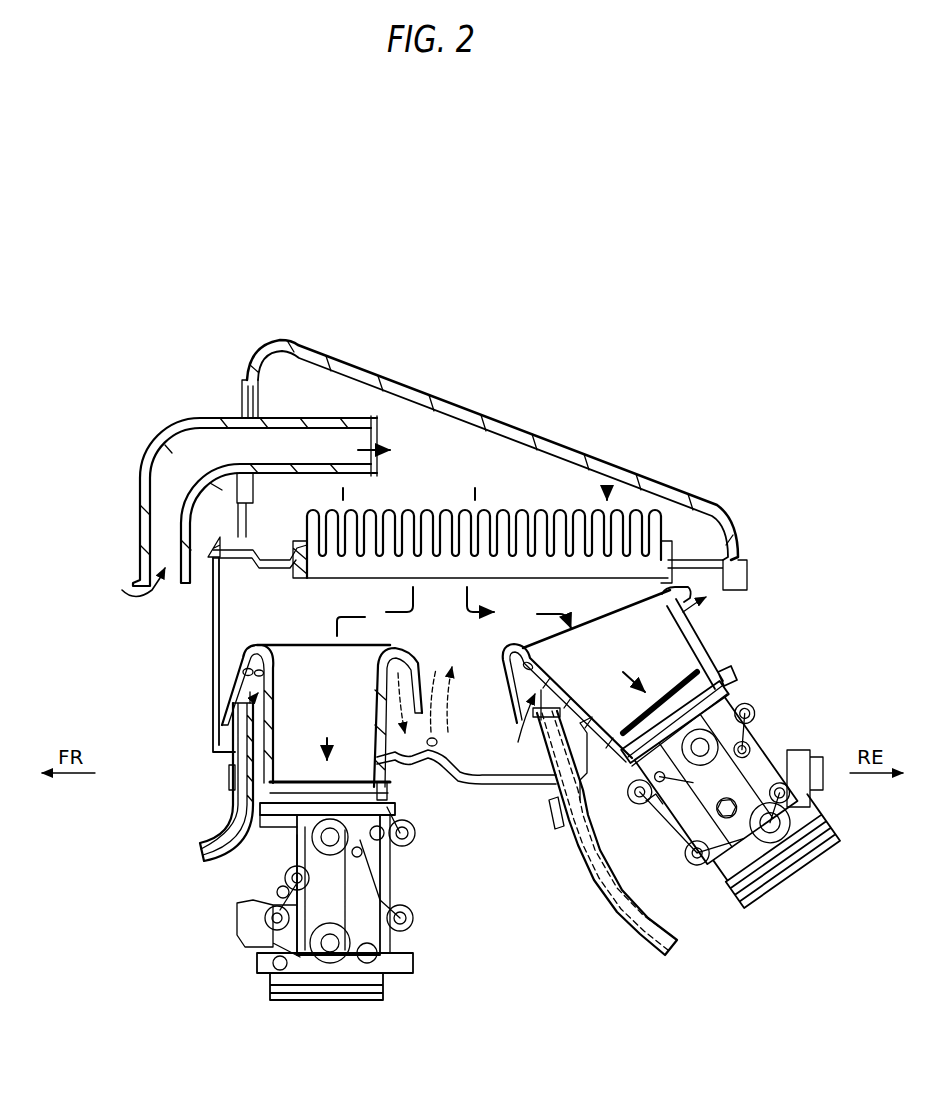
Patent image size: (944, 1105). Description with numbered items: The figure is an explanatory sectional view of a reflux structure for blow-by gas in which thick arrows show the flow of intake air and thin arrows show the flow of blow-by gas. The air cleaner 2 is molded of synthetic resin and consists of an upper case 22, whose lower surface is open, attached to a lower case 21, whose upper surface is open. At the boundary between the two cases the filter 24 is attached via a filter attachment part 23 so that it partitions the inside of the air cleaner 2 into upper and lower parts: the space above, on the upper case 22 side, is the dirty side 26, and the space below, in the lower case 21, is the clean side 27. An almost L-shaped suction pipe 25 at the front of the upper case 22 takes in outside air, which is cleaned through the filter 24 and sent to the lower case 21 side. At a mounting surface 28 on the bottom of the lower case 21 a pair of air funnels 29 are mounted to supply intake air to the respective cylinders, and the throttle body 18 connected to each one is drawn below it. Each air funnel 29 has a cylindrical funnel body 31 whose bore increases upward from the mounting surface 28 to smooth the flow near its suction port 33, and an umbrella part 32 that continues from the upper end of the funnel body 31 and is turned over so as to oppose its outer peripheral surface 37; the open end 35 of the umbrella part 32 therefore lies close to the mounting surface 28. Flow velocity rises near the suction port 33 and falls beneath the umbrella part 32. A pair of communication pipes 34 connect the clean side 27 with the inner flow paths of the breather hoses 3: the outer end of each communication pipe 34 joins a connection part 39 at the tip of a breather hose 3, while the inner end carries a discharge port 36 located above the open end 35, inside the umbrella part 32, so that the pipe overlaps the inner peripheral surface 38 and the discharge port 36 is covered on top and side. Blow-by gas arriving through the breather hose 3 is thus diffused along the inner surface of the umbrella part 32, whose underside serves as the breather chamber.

The air cleaner 2 is at (604, 406).
The breather hose 3 is at (225, 835).
The throttle body 18 is at (258, 886).
The lower case 21 is at (213, 622).
The upper case 22 is at (648, 487).
The filter attachment part 23 is at (278, 565).
The filter 24 is at (445, 572).
The suction pipe 25 is at (178, 432).
The dirty side 26 is at (446, 433).
The clean side 27 is at (490, 765).
The mounting surface 28 is at (430, 760).
The air funnel 29 is at (232, 654).
The funnel body 31 is at (443, 657).
The umbrella part 32 is at (329, 710).
The suction port 33 is at (287, 652).
The communication pipe 34 is at (235, 713).
The open end 35 is at (422, 672).
The discharge port 36 is at (262, 708).
The outer peripheral surface 37 is at (257, 673).
The inner peripheral surface 38 is at (243, 688).
The connection part 39 is at (229, 767).